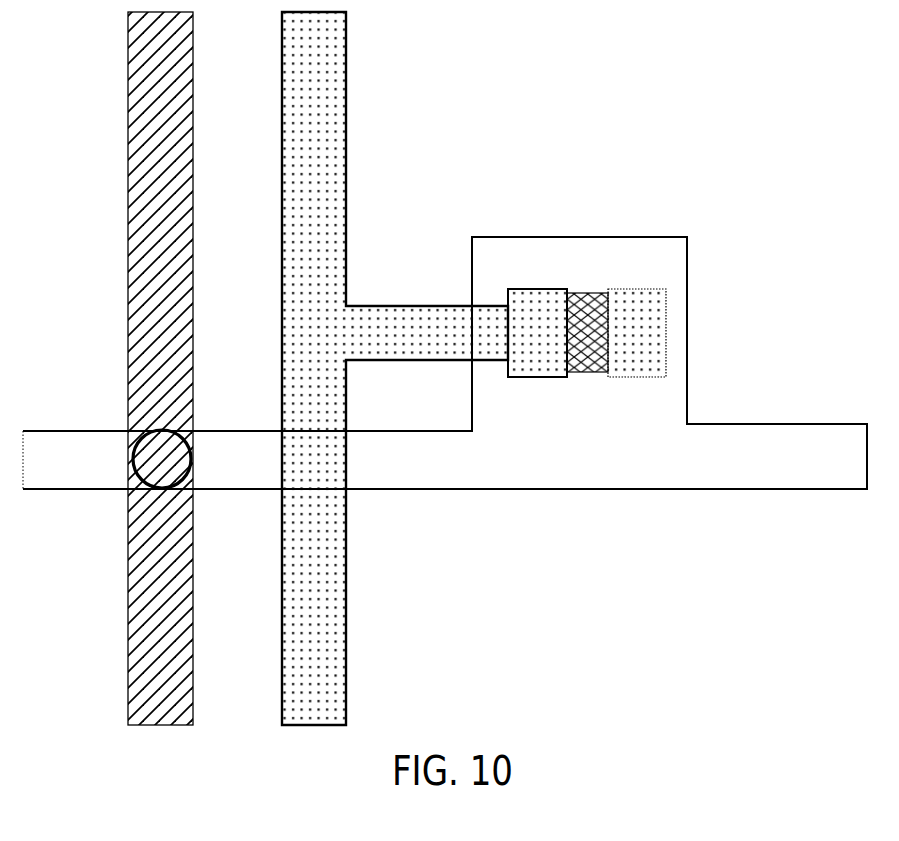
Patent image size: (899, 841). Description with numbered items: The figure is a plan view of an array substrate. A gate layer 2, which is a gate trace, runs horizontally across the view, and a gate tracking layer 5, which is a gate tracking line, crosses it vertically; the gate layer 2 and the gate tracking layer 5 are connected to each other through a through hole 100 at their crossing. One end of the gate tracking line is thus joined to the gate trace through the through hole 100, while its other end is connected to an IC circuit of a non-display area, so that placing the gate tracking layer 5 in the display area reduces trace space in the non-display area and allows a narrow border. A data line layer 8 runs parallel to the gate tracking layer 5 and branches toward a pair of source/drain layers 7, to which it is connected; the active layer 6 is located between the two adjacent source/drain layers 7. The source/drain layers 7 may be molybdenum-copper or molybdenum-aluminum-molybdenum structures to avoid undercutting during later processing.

The gate layer 2 is at (725, 435).
The gate tracking layer 5 is at (152, 320).
The active layer 6 is at (590, 298).
The source/drain layer 7 is at (520, 290).
The data line layer 8 is at (347, 95).
The through hole 100 is at (128, 450).